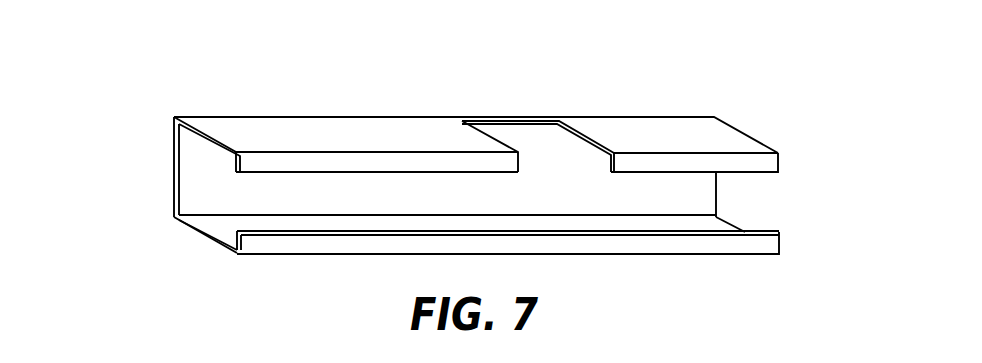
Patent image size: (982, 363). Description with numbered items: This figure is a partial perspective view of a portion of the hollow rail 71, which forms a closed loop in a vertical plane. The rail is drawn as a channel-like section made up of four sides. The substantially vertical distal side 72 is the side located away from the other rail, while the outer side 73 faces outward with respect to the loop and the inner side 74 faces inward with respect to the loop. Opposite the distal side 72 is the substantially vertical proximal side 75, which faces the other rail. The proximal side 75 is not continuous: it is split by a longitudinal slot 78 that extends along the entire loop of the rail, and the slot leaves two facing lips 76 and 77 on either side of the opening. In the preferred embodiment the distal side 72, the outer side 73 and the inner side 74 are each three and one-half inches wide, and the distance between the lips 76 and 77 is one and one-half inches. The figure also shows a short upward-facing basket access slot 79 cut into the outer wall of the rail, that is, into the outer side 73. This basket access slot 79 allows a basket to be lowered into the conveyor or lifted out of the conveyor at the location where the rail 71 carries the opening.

The hollow rail 71 is at (367, 98).
The distal side 72 is at (210, 157).
The outer side 73 is at (306, 128).
The inner side 74 is at (227, 231).
The proximal side 75 is at (678, 158).
The lip 76 is at (757, 173).
The lip 77 is at (757, 233).
The longitudinal slot 78 is at (333, 190).
The basket access slot 79 is at (540, 112).